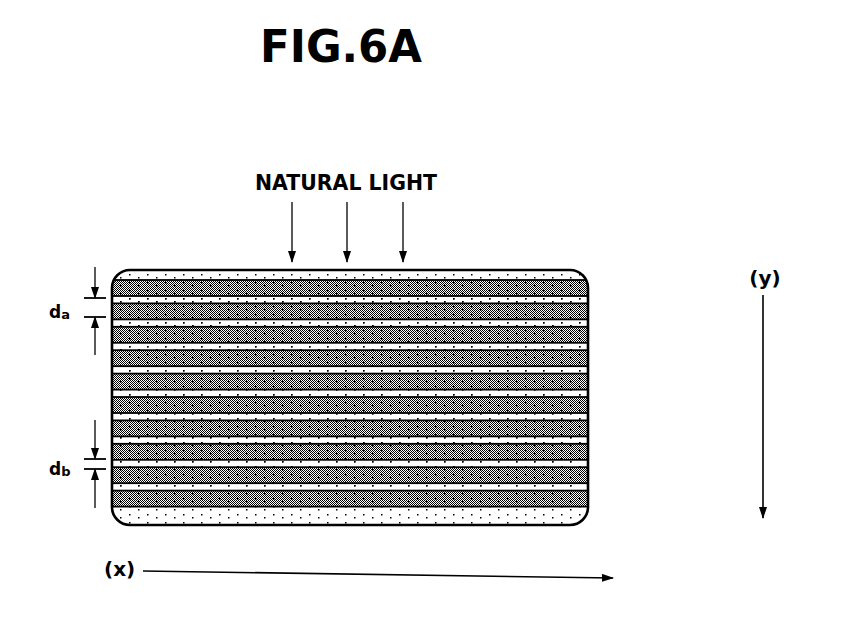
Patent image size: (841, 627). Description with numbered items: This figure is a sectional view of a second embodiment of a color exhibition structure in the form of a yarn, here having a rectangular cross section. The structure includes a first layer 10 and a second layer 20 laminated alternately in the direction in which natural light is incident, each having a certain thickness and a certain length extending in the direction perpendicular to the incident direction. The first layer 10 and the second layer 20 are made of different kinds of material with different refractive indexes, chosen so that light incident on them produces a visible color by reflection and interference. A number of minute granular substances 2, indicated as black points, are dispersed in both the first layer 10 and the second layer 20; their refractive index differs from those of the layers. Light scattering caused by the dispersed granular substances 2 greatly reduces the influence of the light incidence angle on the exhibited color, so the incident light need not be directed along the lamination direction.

The granular substances 2 is at (588, 448).
The first layer 10 is at (588, 385).
The second layer 20 is at (588, 307).